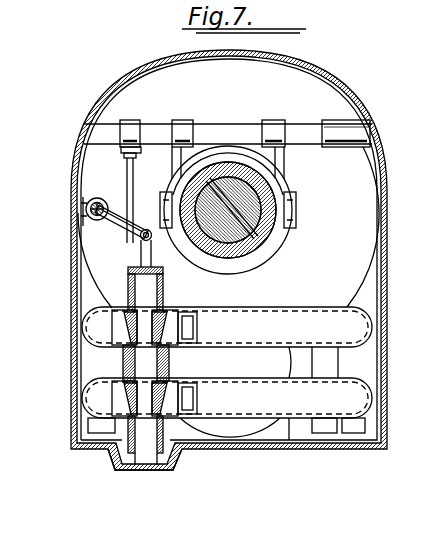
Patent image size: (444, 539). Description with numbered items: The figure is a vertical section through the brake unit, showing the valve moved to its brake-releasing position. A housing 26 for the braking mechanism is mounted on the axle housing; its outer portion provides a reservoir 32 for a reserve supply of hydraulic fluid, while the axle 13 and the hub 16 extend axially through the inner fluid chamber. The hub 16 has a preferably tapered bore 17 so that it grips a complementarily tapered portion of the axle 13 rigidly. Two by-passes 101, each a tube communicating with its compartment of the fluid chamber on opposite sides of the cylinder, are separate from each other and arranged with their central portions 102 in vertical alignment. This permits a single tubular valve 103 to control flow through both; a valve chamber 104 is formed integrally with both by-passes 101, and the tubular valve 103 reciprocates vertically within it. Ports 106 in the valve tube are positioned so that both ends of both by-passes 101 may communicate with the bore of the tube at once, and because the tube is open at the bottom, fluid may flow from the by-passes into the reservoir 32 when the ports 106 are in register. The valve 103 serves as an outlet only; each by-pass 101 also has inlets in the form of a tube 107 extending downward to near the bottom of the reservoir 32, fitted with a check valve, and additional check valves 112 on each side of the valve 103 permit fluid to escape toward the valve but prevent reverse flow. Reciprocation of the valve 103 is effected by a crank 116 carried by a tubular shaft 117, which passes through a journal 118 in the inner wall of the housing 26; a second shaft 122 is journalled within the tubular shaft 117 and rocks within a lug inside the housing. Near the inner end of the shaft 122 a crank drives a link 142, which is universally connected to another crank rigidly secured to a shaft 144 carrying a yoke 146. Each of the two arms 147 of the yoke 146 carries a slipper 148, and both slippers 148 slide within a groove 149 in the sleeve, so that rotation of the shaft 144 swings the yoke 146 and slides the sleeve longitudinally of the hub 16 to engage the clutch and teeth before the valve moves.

The housing 26 is at (382, 125).
The yoke 146 is at (260, 77).
The tubular shaft 117 is at (73, 236).
The shaft 144 is at (158, 134).
The link 142 is at (133, 185).
The journal 118 is at (99, 199).
The second shaft 122 is at (86, 207).
The crank 116 is at (118, 227).
The groove 149 is at (267, 258).
The arms 147 is at (293, 176).
The slipper 148 is at (286, 231).
The axle 13 is at (216, 242).
The bore 17 is at (232, 243).
The hub 16 is at (241, 241).
The by-pass 101 is at (290, 335).
The reservoir 32 is at (380, 366).
The tube 107 is at (367, 428).
The central portions 102 is at (289, 440).
The valve chamber 104 is at (122, 366).
The check valves 112 is at (197, 322).
The ports 106 is at (125, 432).
The tubular valve 103 is at (174, 466).